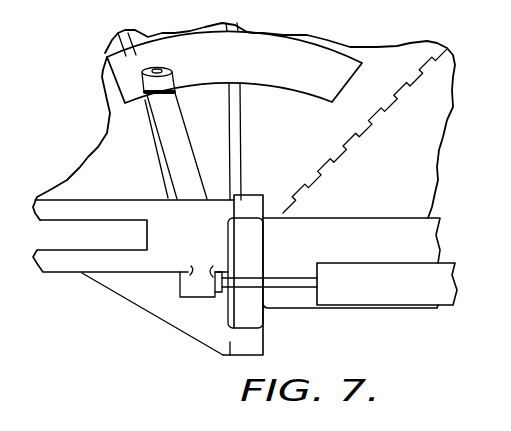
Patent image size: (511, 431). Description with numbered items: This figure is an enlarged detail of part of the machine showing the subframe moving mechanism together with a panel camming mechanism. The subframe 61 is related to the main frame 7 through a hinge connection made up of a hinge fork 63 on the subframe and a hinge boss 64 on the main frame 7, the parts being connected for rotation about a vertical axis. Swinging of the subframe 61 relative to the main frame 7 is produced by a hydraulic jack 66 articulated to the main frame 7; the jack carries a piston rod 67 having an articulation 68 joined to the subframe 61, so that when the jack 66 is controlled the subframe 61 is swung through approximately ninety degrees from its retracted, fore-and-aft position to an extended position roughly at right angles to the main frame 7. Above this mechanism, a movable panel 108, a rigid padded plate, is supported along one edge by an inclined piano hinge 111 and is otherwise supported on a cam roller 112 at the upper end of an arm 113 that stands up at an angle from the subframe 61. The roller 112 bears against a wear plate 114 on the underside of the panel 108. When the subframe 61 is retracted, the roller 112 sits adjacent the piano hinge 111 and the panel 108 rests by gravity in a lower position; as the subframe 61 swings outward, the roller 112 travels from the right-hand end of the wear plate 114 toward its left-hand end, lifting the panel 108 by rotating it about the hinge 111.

The main frame 7 is at (341, 256).
The subframe 61 is at (200, 248).
The hinge fork 63 is at (264, 342).
The hinge boss 64 is at (252, 264).
The hydraulic jack 66 is at (370, 278).
The piston rod 67 is at (292, 288).
The articulation 68 is at (191, 298).
The movable panel 108 is at (347, 148).
The piano hinge 111 is at (371, 128).
The cam roller 112 is at (143, 83).
The arm 113 is at (172, 137).
The wear plate 114 is at (255, 68).